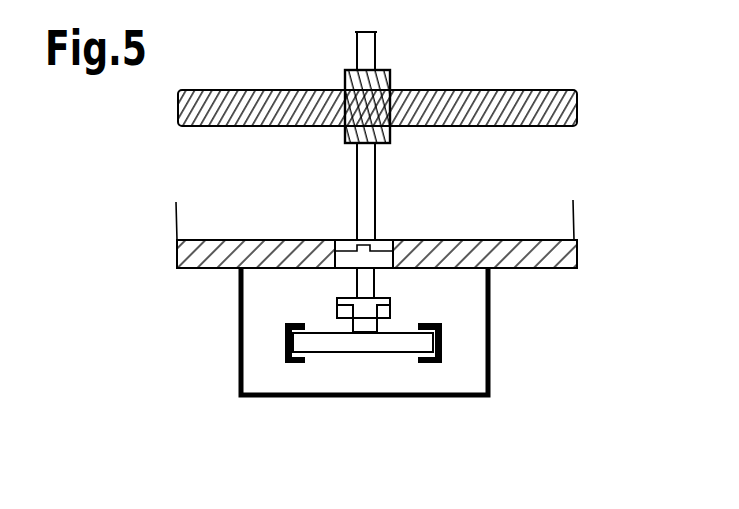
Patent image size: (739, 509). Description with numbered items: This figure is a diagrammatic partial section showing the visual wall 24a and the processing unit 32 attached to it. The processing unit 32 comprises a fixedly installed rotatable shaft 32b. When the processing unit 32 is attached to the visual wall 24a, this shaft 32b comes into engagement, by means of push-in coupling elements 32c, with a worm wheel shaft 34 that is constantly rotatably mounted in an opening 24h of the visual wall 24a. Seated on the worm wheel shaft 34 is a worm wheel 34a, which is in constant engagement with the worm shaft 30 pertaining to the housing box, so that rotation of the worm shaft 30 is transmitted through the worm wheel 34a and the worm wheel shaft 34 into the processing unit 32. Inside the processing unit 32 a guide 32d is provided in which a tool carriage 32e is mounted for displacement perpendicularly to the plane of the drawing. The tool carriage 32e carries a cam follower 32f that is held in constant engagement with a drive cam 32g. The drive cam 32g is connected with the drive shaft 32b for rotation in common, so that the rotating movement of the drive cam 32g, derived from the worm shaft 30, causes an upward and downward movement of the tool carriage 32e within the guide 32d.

The worm shaft 30 is at (223, 97).
The worm wheel 34a is at (385, 71).
The worm wheel shaft 34 is at (367, 178).
The visual wall 24a is at (197, 268).
The opening 24h is at (331, 243).
The push-in coupling elements 32c is at (382, 240).
The rotatable shaft 32b is at (356, 282).
The drive cam 32g is at (340, 304).
The cam follower 32f is at (368, 328).
The processing unit 32 is at (497, 400).
The tool carriage 32e is at (355, 346).
The guide 32d is at (284, 365).